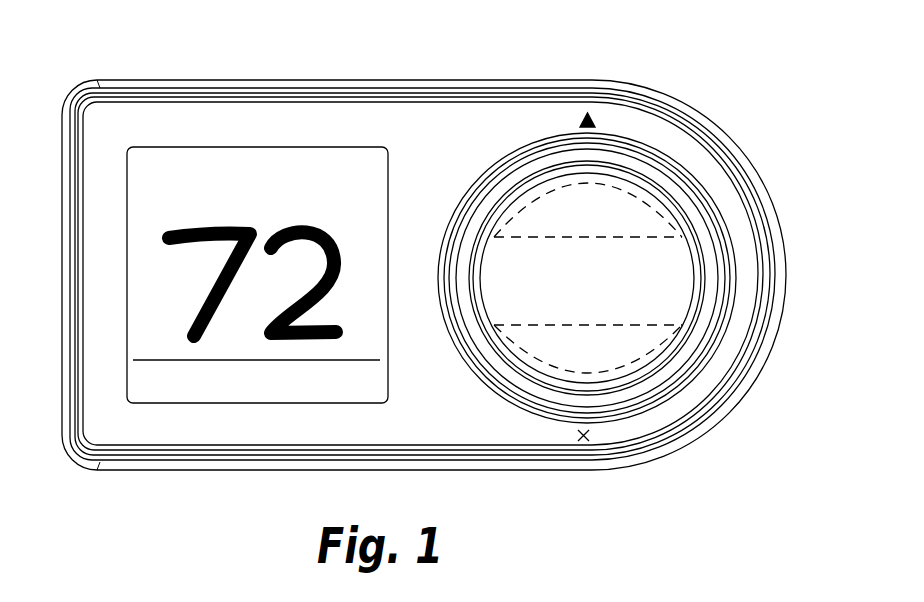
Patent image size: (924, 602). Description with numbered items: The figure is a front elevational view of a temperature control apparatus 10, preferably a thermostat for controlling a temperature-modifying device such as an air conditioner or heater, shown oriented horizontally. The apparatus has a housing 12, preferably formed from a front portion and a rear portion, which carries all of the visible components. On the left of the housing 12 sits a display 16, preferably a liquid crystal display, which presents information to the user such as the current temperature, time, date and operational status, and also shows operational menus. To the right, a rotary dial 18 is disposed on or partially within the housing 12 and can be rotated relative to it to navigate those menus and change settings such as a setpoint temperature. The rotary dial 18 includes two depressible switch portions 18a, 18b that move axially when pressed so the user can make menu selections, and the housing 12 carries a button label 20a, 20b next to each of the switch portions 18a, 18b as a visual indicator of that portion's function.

The temperature control apparatus 10 is at (525, 53).
The housing 12 is at (712, 140).
The display 16 is at (345, 167).
The rotary dial 18 is at (672, 284).
The depressible switch portion 18a is at (610, 221).
The depressible switch portion 18b is at (614, 352).
The button label 20a is at (589, 116).
The button label 20b is at (588, 433).